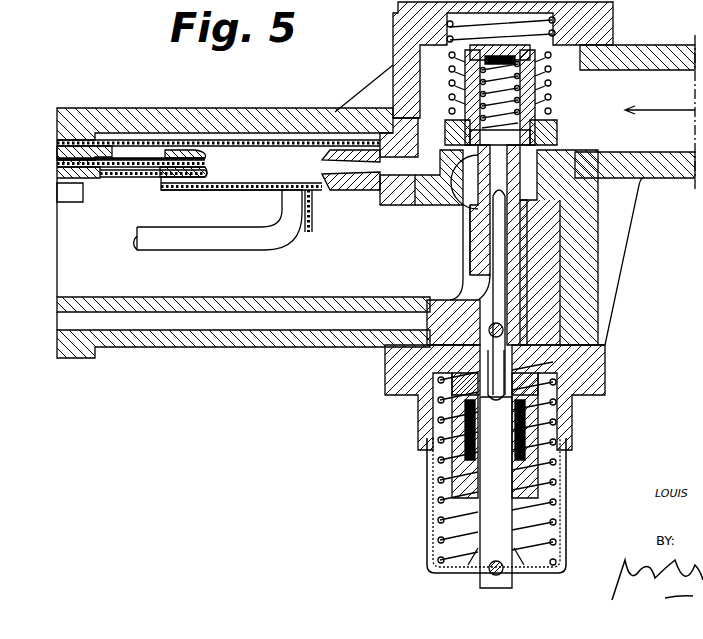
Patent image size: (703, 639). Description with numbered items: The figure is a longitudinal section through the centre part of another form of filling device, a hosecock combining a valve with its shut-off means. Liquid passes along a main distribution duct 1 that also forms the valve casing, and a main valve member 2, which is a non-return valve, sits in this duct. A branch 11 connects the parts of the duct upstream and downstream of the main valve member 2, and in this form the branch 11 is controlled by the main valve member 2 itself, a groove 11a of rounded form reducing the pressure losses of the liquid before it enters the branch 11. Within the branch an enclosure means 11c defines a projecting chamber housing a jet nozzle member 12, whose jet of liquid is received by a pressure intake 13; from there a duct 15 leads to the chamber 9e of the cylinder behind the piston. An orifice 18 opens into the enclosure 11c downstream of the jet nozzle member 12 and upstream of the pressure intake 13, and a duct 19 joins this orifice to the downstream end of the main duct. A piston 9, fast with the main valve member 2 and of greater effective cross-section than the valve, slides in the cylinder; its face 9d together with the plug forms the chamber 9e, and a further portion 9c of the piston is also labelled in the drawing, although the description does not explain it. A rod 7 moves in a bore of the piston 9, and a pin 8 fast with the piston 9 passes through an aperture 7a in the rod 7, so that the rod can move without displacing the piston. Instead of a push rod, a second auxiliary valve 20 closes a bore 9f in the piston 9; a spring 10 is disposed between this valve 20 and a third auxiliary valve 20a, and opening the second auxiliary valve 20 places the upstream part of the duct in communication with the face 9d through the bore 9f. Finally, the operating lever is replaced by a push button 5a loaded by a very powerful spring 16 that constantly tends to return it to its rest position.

The main distribution duct 1 is at (647, 80).
The main valve member 2 is at (545, 133).
The second auxiliary valve 20 is at (548, 137).
The third auxiliary valve 20a is at (505, 72).
The spring 10 is at (398, 66).
The branch 11 is at (430, 169).
The groove of rounded form 11a is at (457, 203).
The enclosure means 11c is at (262, 190).
The jet nozzle member 12 is at (323, 157).
The pressure intake 13 is at (183, 152).
The duct 15 is at (175, 332).
The spring 16 is at (437, 522).
The orifice 18 is at (318, 197).
The duct 19 is at (232, 243).
The push button 5a is at (563, 489).
The rod 7 is at (505, 551).
The aperture 7a is at (495, 397).
The pin 8 is at (490, 325).
The piston 9 is at (563, 285).
The seat insert 9c is at (530, 270).
The face of the piston 9d is at (425, 394).
The chamber 9e is at (598, 347).
The bore 9f is at (506, 223).